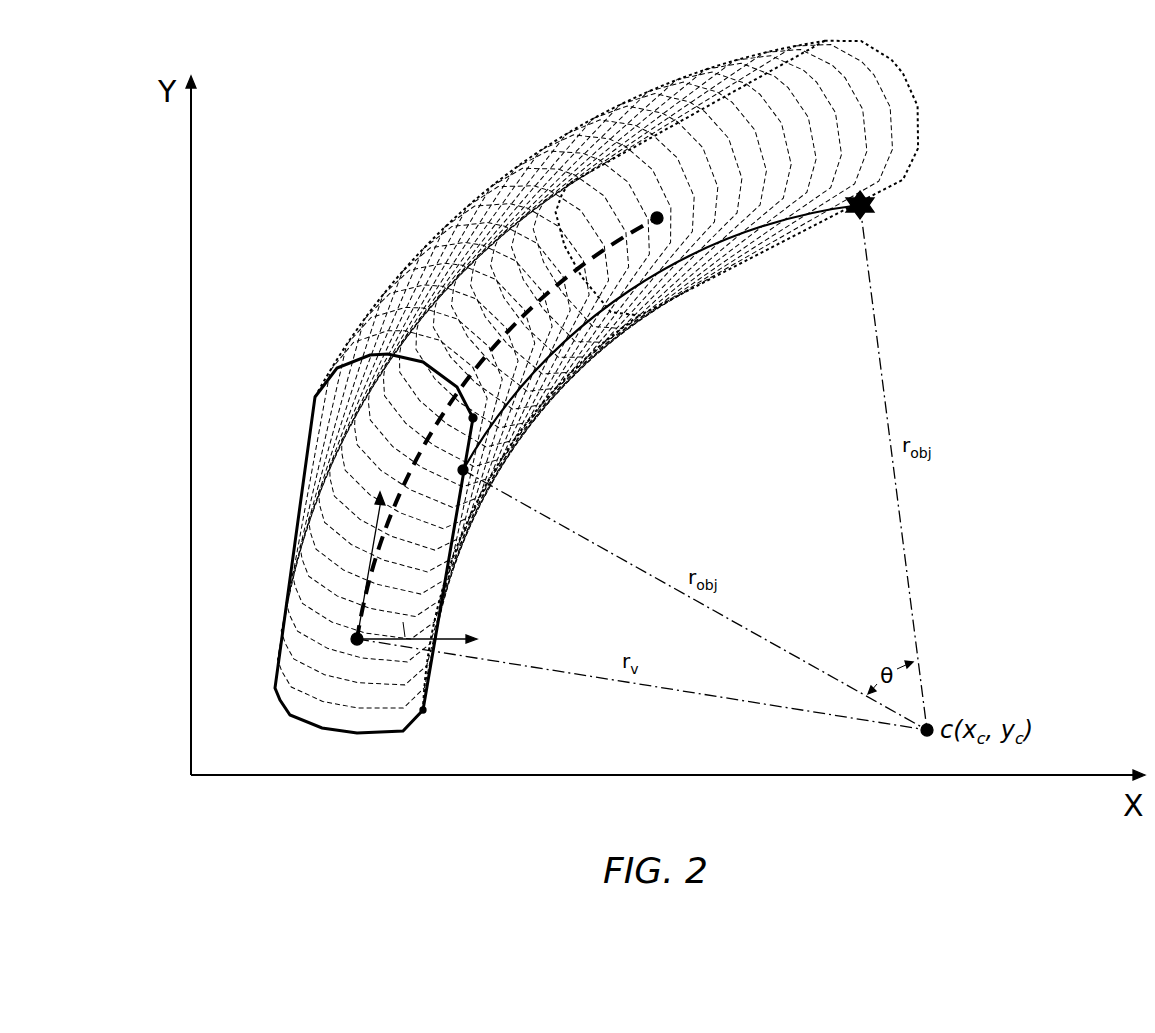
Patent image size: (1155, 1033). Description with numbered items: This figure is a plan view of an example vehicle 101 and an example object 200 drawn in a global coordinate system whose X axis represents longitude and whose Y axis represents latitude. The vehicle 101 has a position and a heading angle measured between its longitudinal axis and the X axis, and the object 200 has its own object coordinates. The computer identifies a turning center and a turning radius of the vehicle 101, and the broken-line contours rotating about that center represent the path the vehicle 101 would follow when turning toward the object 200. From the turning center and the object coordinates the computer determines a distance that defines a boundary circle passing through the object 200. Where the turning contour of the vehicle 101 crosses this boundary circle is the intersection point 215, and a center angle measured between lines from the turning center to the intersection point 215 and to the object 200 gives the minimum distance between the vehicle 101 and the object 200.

The vehicle 101 is at (315, 418).
The object 200 is at (866, 213).
The intersection point 215 is at (470, 496).